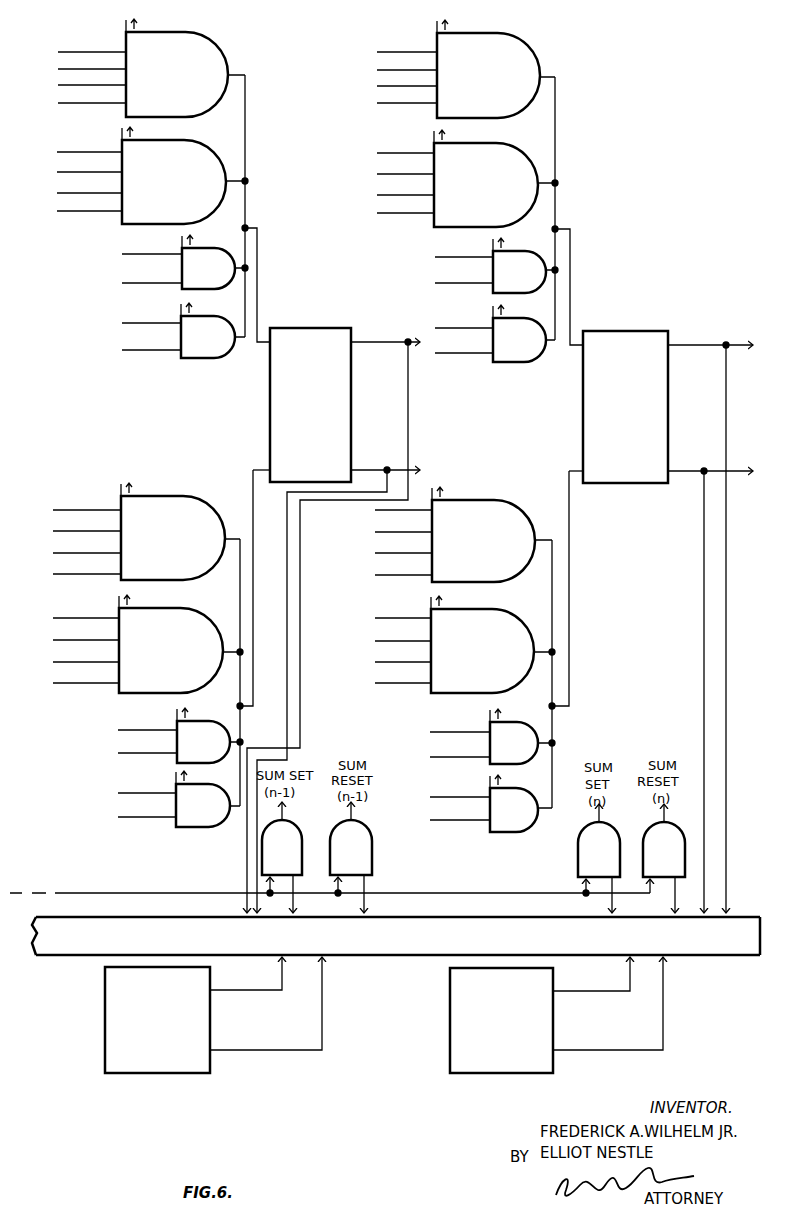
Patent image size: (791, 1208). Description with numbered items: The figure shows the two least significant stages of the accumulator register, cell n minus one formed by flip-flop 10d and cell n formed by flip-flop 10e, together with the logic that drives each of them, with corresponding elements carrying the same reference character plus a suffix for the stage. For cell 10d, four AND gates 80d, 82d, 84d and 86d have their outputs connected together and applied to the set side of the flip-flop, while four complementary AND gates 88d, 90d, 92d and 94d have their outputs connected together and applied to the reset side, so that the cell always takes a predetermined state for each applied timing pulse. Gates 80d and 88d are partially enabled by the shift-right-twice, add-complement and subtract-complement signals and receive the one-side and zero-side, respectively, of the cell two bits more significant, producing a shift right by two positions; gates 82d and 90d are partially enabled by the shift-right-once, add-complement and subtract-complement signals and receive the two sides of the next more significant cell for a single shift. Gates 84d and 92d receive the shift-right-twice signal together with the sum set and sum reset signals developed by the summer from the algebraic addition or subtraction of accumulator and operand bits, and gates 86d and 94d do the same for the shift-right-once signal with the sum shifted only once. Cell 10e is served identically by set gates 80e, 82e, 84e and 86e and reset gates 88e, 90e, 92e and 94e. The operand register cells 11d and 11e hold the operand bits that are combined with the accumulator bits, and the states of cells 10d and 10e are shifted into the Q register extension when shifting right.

The AND gate 80d is at (209, 30).
The AND gate 82d is at (204, 138).
The AND gate 84d is at (205, 246).
The AND gate 86d is at (205, 313).
The binary cell 10d is at (275, 326).
The AND gate 88d is at (197, 494).
The AND gate 90d is at (193, 606).
The AND gate 92d is at (199, 718).
The AND gate 94d is at (195, 782).
The operand register cell 11d is at (213, 1025).
The AND gate 80e is at (516, 30).
The AND gate 82e is at (514, 140).
The AND gate 84e is at (516, 248).
The AND gate 86e is at (516, 315).
The binary cell 10e is at (589, 329).
The AND gate 88e is at (505, 498).
The AND gate 90e is at (503, 607).
The AND gate 92e is at (508, 719).
The AND gate 94e is at (508, 785).
The operand register cell 11e is at (556, 1025).